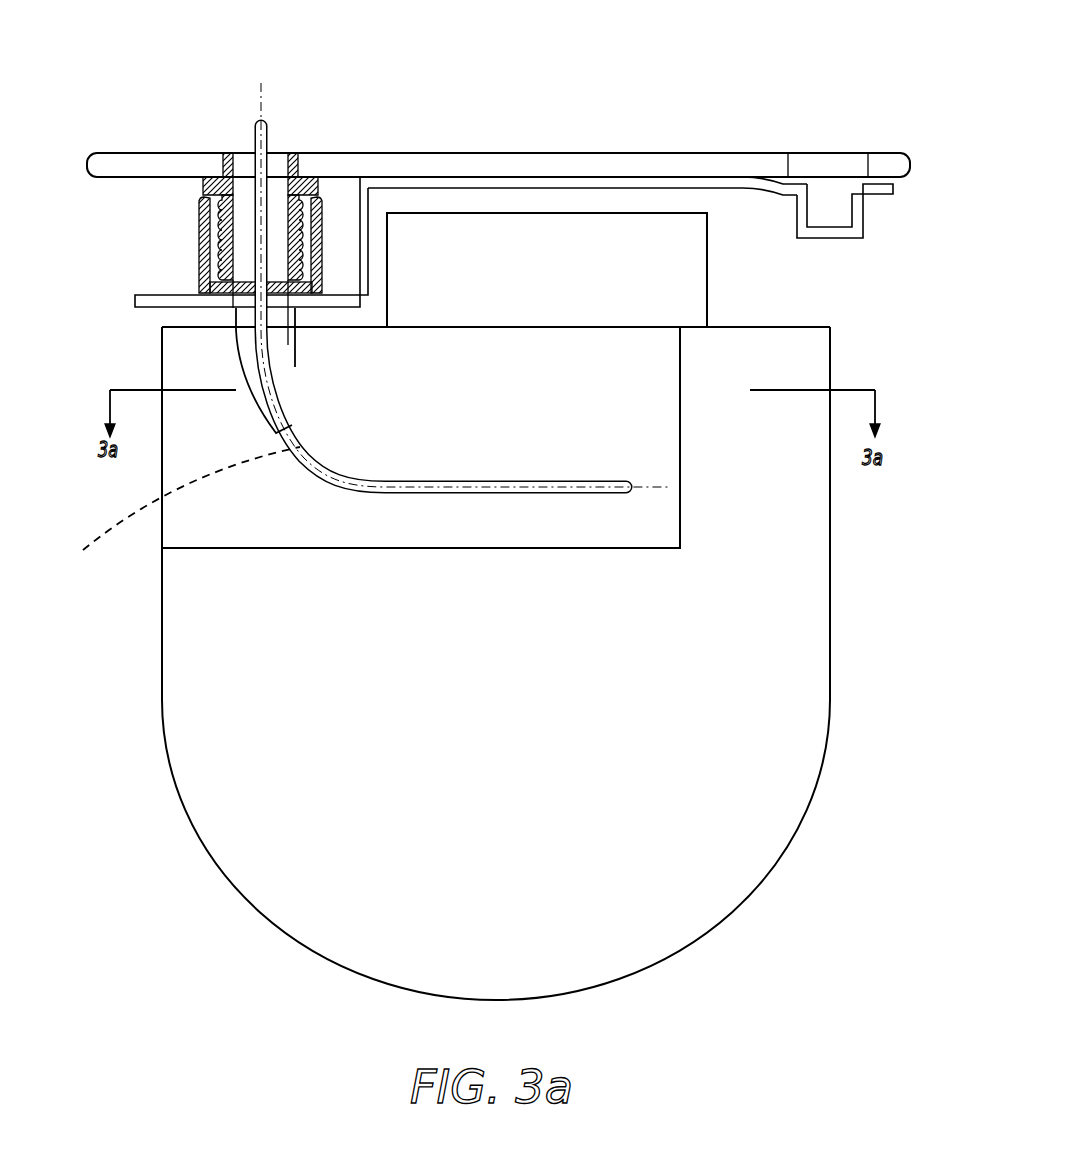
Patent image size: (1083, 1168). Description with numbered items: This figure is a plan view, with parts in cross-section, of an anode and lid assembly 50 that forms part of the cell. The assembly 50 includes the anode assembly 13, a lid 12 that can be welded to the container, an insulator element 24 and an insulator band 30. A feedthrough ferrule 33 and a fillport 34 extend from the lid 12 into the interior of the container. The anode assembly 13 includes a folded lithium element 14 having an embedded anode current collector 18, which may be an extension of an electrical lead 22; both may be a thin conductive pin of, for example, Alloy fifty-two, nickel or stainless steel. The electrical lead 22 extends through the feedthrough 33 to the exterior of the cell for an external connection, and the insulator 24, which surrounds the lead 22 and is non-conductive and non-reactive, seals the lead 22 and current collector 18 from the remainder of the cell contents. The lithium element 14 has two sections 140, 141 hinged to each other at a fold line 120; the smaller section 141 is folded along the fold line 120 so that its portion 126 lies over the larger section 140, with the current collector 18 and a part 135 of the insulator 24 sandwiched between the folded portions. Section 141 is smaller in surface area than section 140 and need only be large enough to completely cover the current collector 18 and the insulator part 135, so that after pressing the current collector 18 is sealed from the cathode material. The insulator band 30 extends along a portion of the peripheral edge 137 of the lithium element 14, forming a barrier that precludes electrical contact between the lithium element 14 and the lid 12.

The lid 12 is at (112, 152).
The anode assembly 13 is at (738, 302).
The folded lithium element 14 is at (832, 712).
The anode current collector 18 is at (185, 514).
The electrical lead 22 is at (267, 140).
The insulator element 24 is at (200, 247).
The insulator band 30 is at (667, 176).
The feedthrough ferrule 33 is at (302, 176).
The fillport 34 is at (850, 210).
The anode and lid assembly 50 is at (642, 95).
The fold line 120 is at (162, 469).
The portion of section 141 126 is at (301, 518).
The part of insulator 135 is at (238, 358).
The peripheral edge 137 is at (518, 213).
The section of lithium element 140 is at (683, 677).
The section of lithium element 141 is at (625, 413).